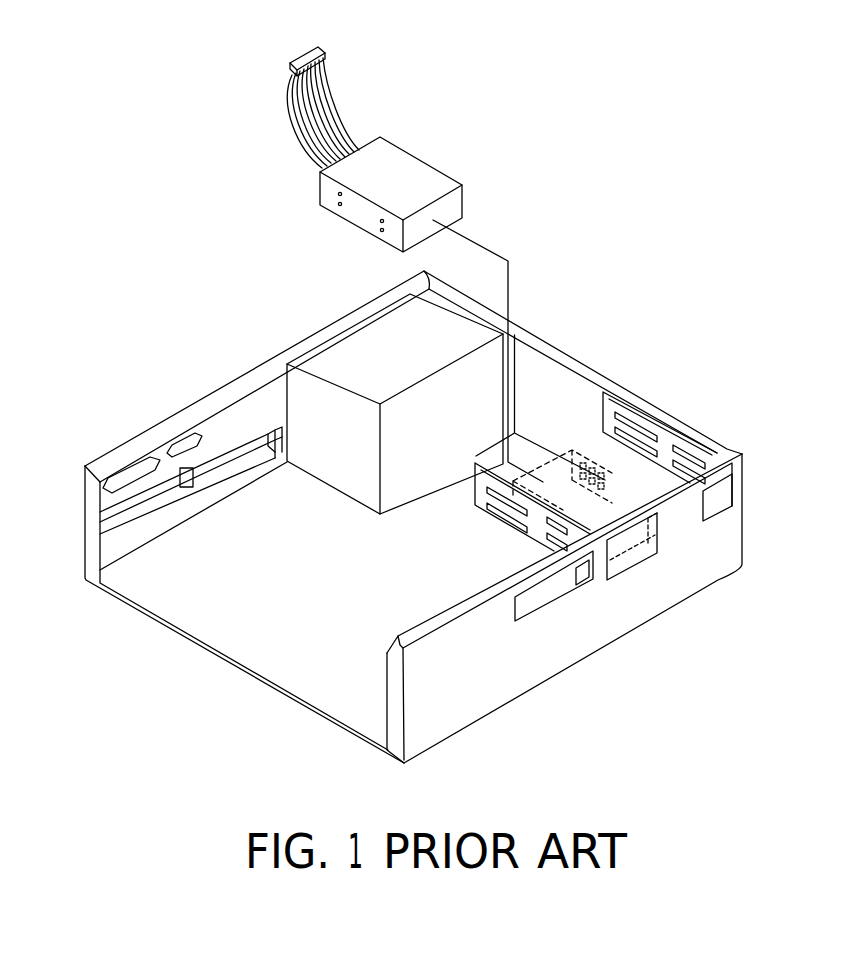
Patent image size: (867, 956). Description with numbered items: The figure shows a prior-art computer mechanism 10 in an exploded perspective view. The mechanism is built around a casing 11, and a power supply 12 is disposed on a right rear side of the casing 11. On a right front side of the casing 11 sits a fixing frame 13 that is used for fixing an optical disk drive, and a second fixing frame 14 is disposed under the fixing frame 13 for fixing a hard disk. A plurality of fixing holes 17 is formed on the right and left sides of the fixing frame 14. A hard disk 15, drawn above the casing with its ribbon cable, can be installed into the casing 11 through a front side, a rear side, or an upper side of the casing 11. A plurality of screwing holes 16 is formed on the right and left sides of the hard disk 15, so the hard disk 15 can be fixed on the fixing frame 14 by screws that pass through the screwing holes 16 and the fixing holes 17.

The computer mechanism 10 is at (755, 168).
The casing 11 is at (233, 513).
The power supply 12 is at (375, 345).
The fixing frame 13 is at (535, 523).
The fixing frame 14 is at (633, 533).
The hard disk 15 is at (390, 157).
The screwing holes 16 is at (382, 220).
The fixing holes 17 is at (598, 474).